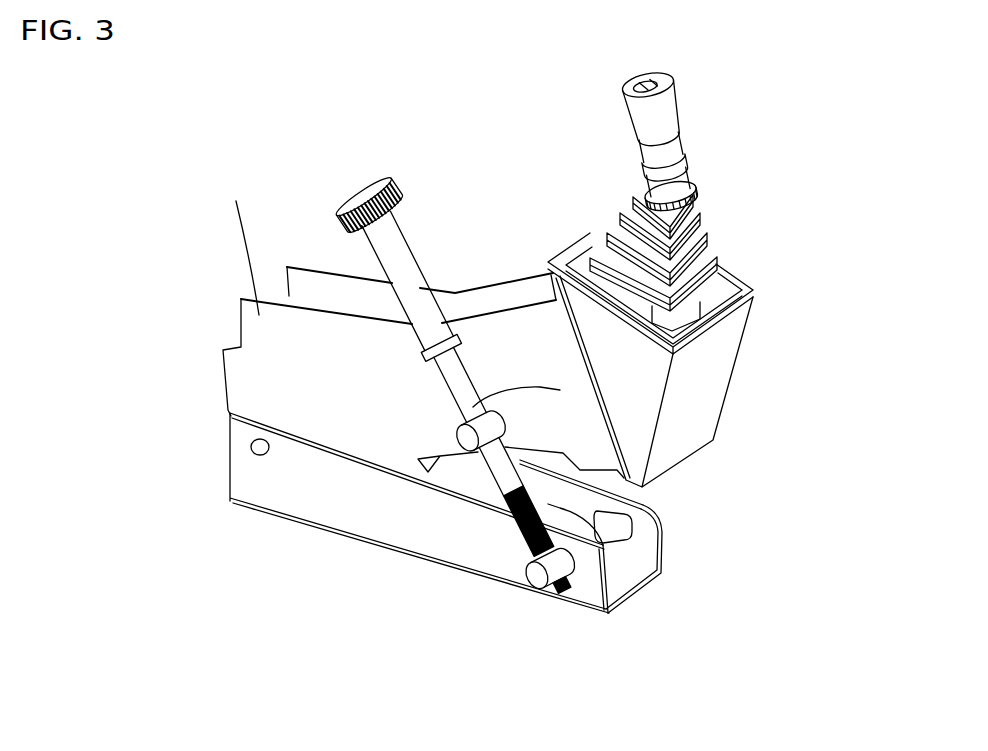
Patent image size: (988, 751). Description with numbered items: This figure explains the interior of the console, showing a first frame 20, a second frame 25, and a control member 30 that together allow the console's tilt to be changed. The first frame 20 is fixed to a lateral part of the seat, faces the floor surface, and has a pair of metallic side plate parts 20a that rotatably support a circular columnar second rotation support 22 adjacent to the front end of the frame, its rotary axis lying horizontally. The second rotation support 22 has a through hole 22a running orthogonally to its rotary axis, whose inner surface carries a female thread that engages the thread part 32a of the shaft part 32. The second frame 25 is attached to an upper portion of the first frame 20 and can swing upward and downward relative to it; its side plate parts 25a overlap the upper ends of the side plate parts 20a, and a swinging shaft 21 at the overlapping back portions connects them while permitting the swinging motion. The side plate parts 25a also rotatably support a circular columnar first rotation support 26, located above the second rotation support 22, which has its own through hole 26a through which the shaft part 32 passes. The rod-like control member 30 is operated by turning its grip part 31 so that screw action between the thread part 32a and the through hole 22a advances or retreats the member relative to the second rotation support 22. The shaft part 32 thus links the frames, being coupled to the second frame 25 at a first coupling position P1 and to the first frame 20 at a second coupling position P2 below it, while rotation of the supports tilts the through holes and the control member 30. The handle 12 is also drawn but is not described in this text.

The operation lever handle 12 is at (683, 138).
The first frame 20 is at (486, 522).
The side plate parts 20a is at (593, 590).
The swinging shaft 21 is at (250, 455).
The second rotation support 22 is at (553, 574).
The through hole 22a is at (630, 498).
The second frame 25 is at (740, 352).
The side plate parts 25a is at (300, 278).
The first rotation support 26 is at (565, 512).
The through hole 26a is at (560, 390).
The control member 30 is at (417, 422).
The grip part 31 is at (369, 205).
The shaft part 32 is at (480, 430).
The thread part 32a is at (529, 521).
The first coupling position P1 is at (467, 438).
The second coupling position P2 is at (537, 575).